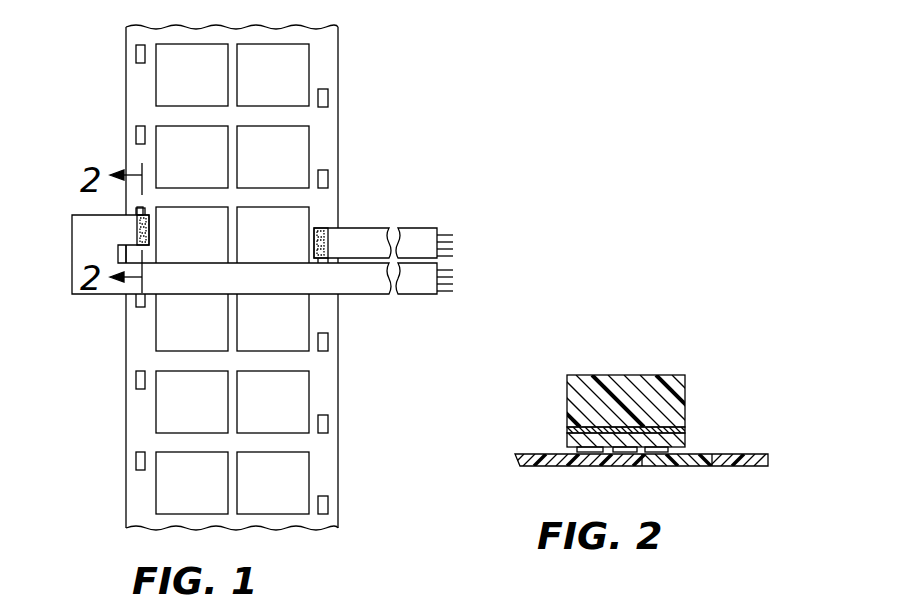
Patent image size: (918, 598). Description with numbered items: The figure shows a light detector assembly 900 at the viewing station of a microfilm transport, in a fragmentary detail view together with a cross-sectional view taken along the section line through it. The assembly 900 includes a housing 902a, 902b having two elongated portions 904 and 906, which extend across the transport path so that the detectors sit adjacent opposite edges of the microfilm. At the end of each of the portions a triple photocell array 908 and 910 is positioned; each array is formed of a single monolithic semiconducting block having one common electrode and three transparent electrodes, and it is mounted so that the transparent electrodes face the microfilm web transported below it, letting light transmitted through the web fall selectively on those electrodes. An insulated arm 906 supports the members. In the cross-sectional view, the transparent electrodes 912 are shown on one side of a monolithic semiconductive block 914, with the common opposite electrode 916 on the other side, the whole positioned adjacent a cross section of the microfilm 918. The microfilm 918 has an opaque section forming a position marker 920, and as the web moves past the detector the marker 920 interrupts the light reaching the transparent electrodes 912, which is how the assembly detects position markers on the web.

In FIG. 1, the light detector assembly 900 is at (444, 222).
In FIG. 1, the housing 902a is at (408, 292).
In FIG. 1, the housing 902b is at (408, 237).
In FIG. 1, the elongated portion 904 is at (330, 238).
In FIG. 1, the elongated portion 906 is at (108, 232).
In FIG. 2, the elongated portion 906 is at (618, 378).
In FIG. 1, the triple photocell array 908 is at (313, 243).
In FIG. 1, the triple photocell array 910 is at (150, 232).
In FIG. 2, the transparent electrodes 912 is at (617, 450).
In FIG. 2, the monolithic semiconductive block 914 is at (685, 439).
In FIG. 2, the common opposite electrode 916 is at (570, 428).
In FIG. 1, the microfilm 918 is at (125, 95).
In FIG. 2, the microfilm 918 is at (725, 468).
In FIG. 1, the position marker 920 is at (135, 52).
In FIG. 2, the position marker 920 is at (650, 467).